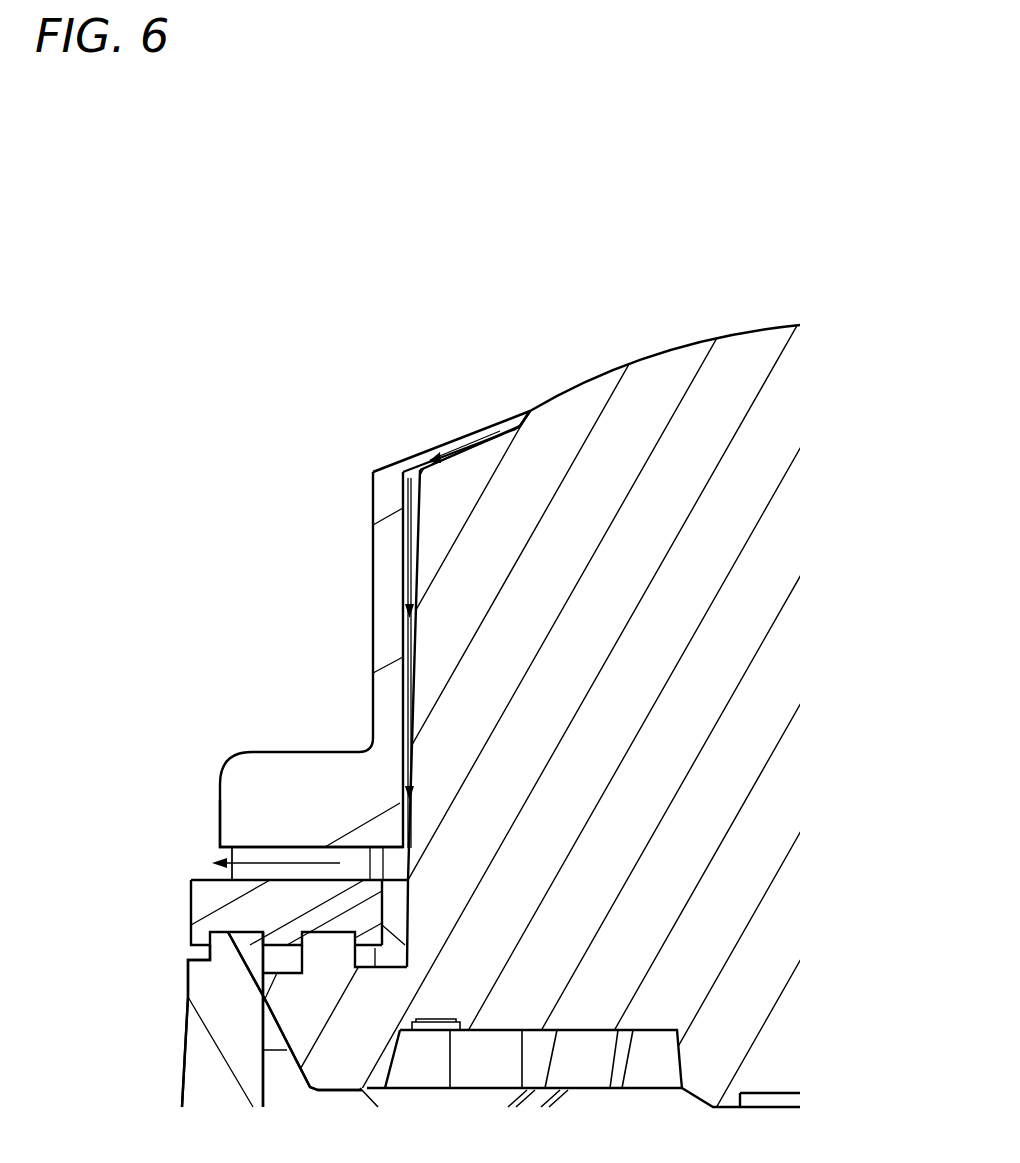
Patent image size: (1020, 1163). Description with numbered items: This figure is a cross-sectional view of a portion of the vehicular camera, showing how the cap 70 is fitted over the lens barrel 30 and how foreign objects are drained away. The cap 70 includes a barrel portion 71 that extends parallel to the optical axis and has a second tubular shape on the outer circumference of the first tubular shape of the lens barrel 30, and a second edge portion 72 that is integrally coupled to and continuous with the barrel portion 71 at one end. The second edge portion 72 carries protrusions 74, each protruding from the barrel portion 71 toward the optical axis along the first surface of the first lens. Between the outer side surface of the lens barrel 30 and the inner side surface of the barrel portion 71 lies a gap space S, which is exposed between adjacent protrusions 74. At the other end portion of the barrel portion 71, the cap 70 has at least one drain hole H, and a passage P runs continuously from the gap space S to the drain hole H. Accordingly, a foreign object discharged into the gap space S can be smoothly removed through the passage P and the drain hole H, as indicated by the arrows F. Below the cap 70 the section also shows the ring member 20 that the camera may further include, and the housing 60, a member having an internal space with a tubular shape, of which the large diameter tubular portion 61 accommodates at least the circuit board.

The lens barrel 30 is at (752, 610).
The cap 70 is at (372, 577).
The second edge portion 72 is at (384, 487).
The protrusions 74 is at (432, 452).
The barrel portion 71 is at (372, 698).
The ring member 20 is at (191, 913).
The housing 60 is at (182, 1082).
The large diameter tubular portion 61 is at (272, 1019).
The passage P is at (408, 645).
The arrows F is at (450, 446).
The gap space S is at (490, 415).
The drain hole H is at (224, 855).